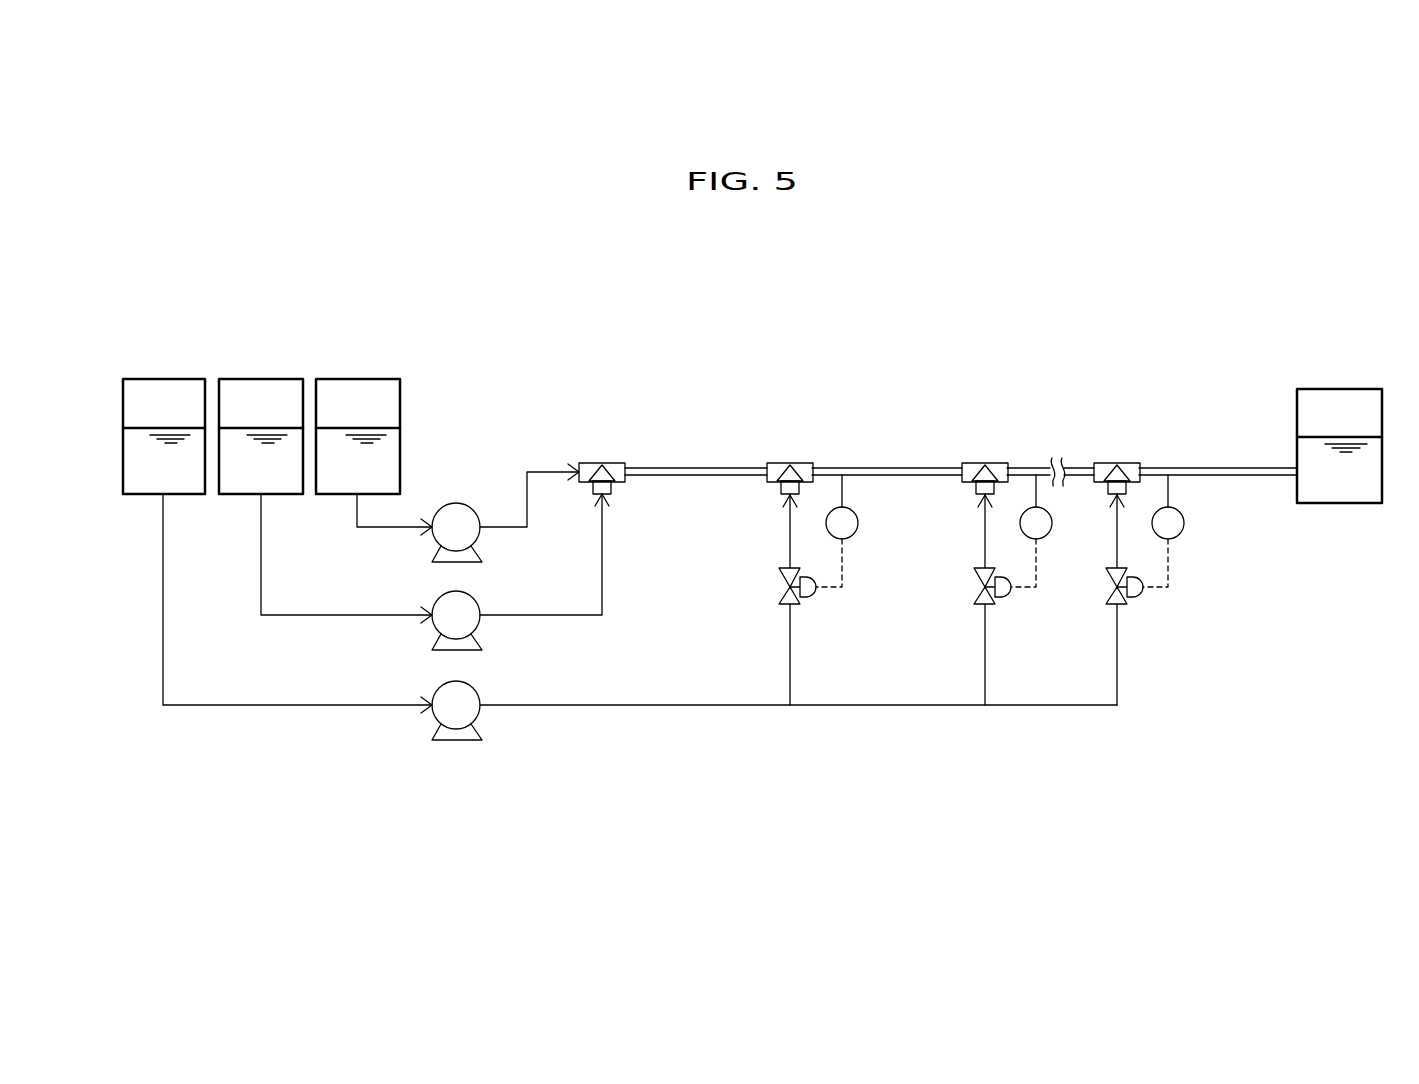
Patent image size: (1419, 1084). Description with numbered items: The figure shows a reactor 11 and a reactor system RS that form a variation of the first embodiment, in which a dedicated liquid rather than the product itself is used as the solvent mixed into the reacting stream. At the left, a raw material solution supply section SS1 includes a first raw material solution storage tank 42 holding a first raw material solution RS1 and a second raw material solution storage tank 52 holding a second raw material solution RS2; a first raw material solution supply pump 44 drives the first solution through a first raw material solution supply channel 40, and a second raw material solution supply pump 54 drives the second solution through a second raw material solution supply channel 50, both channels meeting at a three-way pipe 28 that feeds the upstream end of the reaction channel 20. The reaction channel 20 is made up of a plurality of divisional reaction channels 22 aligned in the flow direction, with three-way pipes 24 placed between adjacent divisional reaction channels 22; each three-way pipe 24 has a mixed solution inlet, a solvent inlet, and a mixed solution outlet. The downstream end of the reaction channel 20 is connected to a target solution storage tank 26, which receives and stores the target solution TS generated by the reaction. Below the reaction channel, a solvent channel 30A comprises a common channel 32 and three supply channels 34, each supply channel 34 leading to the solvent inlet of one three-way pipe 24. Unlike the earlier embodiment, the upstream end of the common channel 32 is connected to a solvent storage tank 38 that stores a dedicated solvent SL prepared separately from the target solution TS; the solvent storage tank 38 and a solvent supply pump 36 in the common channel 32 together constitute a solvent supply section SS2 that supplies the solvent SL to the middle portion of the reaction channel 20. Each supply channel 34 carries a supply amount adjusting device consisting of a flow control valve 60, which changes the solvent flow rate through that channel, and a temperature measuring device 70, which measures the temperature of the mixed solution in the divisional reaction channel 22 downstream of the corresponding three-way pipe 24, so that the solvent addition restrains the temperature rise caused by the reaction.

The reactor 11 is at (630, 392).
The reaction channel 20 is at (648, 484).
The divisional reaction channel 22 is at (708, 478).
The three-way pipe 24 is at (781, 463).
The target solution storage tank 26 is at (1333, 389).
The three-way pipe 28 is at (595, 463).
The solvent channel 30A is at (305, 708).
The common channel 32 is at (607, 707).
The supply channel 34 is at (789, 670).
The solvent supply pump 36 is at (481, 687).
The solvent storage tank 38 is at (163, 379).
The first raw material solution supply channel 40 is at (500, 528).
The first raw material solution storage tank 42 is at (357, 379).
The first raw material solution supply pump 44 is at (468, 508).
The second raw material solution supply channel 50 is at (520, 616).
The second raw material solution storage tank 52 is at (259, 379).
The second raw material solution supply pump 54 is at (481, 597).
The flow control valve 60 is at (793, 604).
The temperature measuring device 70 is at (858, 528).
The raw material solution supply section SS1 is at (457, 348).
The solvent supply section SS2 is at (400, 765).
The reactor system RS is at (1083, 325).
The first raw material solution RS1 is at (391, 450).
The second raw material solution RS2 is at (278, 483).
The solvent SL is at (185, 483).
The target solution TS is at (1357, 494).